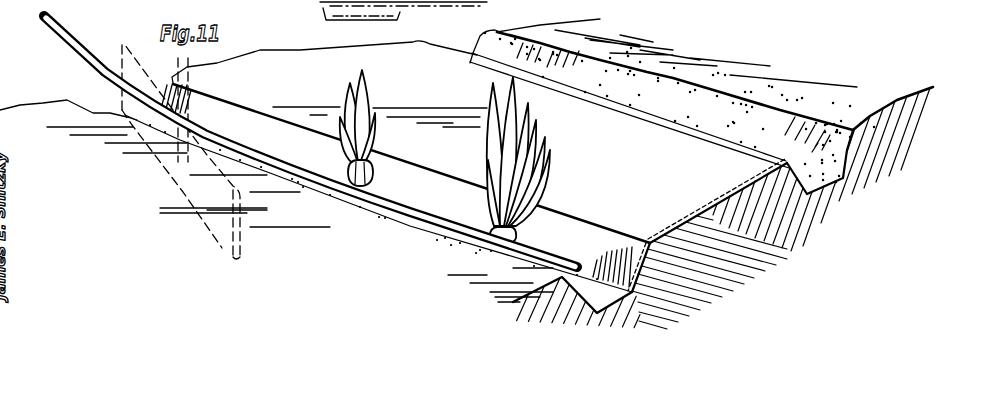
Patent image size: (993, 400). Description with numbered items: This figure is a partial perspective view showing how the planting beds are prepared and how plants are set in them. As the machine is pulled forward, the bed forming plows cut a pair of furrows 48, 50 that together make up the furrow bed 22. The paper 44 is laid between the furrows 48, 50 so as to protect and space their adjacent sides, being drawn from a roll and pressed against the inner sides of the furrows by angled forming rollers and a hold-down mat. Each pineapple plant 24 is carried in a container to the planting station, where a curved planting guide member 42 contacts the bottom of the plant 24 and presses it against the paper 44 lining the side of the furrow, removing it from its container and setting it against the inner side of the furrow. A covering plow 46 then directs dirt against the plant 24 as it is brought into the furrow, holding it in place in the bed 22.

The furrow bed 22 is at (670, 100).
The pineapple plant 24 is at (515, 233).
The planting guide member 42 is at (346, 185).
The paper 44 is at (480, 188).
The covering plow 46 is at (218, 222).
The furrow 48 is at (608, 297).
The furrow 50 is at (833, 148).